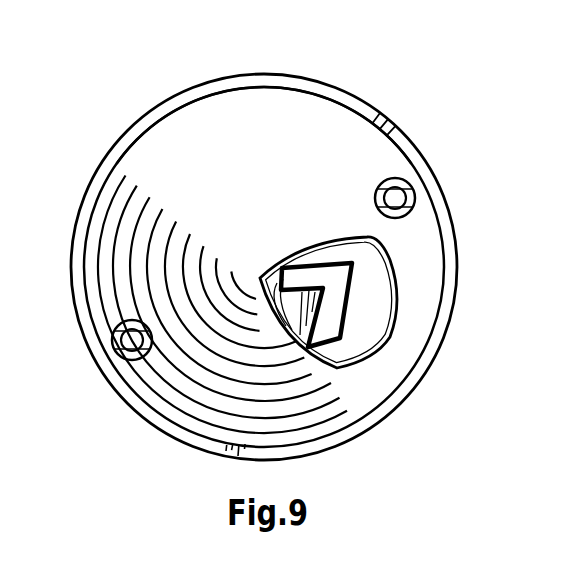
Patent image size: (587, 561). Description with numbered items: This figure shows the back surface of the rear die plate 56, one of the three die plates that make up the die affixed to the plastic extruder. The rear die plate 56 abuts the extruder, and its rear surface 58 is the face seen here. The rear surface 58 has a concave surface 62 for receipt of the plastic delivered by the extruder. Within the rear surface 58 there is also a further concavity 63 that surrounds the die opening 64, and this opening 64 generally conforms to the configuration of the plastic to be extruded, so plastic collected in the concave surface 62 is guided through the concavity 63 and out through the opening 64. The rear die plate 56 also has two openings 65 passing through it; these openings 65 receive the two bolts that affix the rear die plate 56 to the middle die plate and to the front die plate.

The rear die plate 56 is at (425, 158).
The rear surface 58 is at (440, 255).
The concave surface 62 is at (288, 120).
The further concavity 63 is at (375, 320).
The die opening 64 is at (340, 337).
The openings 65 is at (378, 190).